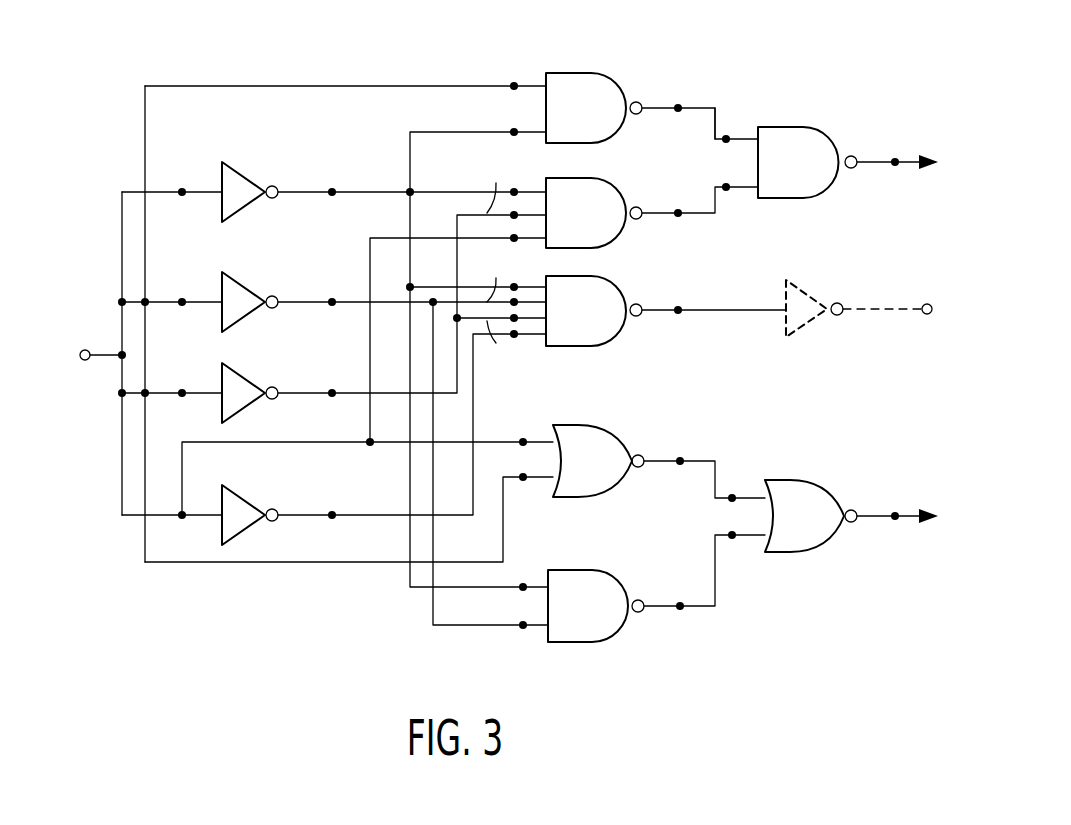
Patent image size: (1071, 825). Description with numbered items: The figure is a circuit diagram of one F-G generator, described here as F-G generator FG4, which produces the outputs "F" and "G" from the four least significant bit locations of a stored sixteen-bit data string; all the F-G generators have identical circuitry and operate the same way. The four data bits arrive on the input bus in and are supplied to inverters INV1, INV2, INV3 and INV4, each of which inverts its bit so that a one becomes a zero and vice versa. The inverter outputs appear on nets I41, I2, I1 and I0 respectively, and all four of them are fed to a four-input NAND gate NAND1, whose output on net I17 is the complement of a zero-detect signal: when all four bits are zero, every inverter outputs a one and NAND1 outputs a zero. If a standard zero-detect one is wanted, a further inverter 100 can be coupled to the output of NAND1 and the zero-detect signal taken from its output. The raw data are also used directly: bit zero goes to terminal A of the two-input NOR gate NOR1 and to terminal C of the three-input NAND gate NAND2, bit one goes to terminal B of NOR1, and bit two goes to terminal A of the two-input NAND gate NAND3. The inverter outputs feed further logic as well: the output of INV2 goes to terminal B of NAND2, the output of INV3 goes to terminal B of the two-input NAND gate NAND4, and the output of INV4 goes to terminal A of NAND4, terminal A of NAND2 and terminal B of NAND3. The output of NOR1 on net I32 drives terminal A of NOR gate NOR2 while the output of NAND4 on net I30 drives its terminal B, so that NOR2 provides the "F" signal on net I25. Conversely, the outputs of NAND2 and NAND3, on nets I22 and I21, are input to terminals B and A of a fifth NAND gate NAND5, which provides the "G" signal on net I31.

The inverter 100 is at (815, 297).
The F-G generator FG4 is at (722, 97).
The inverter INV1 is at (246, 500).
The inverter INV2 is at (246, 378).
The inverter INV3 is at (246, 287).
The inverter INV4 is at (246, 176).
The four-input NAND gate NAND1 is at (565, 309).
The three-input NAND gate NAND2 is at (565, 212).
The two-input NAND gate NAND3 is at (585, 111).
The two-input NAND gate NAND4 is at (588, 612).
The fifth NAND gate NAND5 is at (797, 163).
The two-input NOR gate NOR1 is at (590, 462).
The two-input NOR gate NOR2 is at (801, 517).
The net I0 is at (413, 359).
The net I1 is at (413, 450).
The net I2 is at (412, 304).
The net I41 is at (412, 424).
The net I21 is at (700, 110).
The net I22 is at (700, 200).
The net I17 is at (714, 297).
The net I32 is at (704, 466).
The net I30 is at (704, 570).
The output net I31 (g_4) I31 is at (897, 168).
The output net I25 (f_4) I25 is at (897, 522).
The input bus in 0:3 in is at (130, 324).